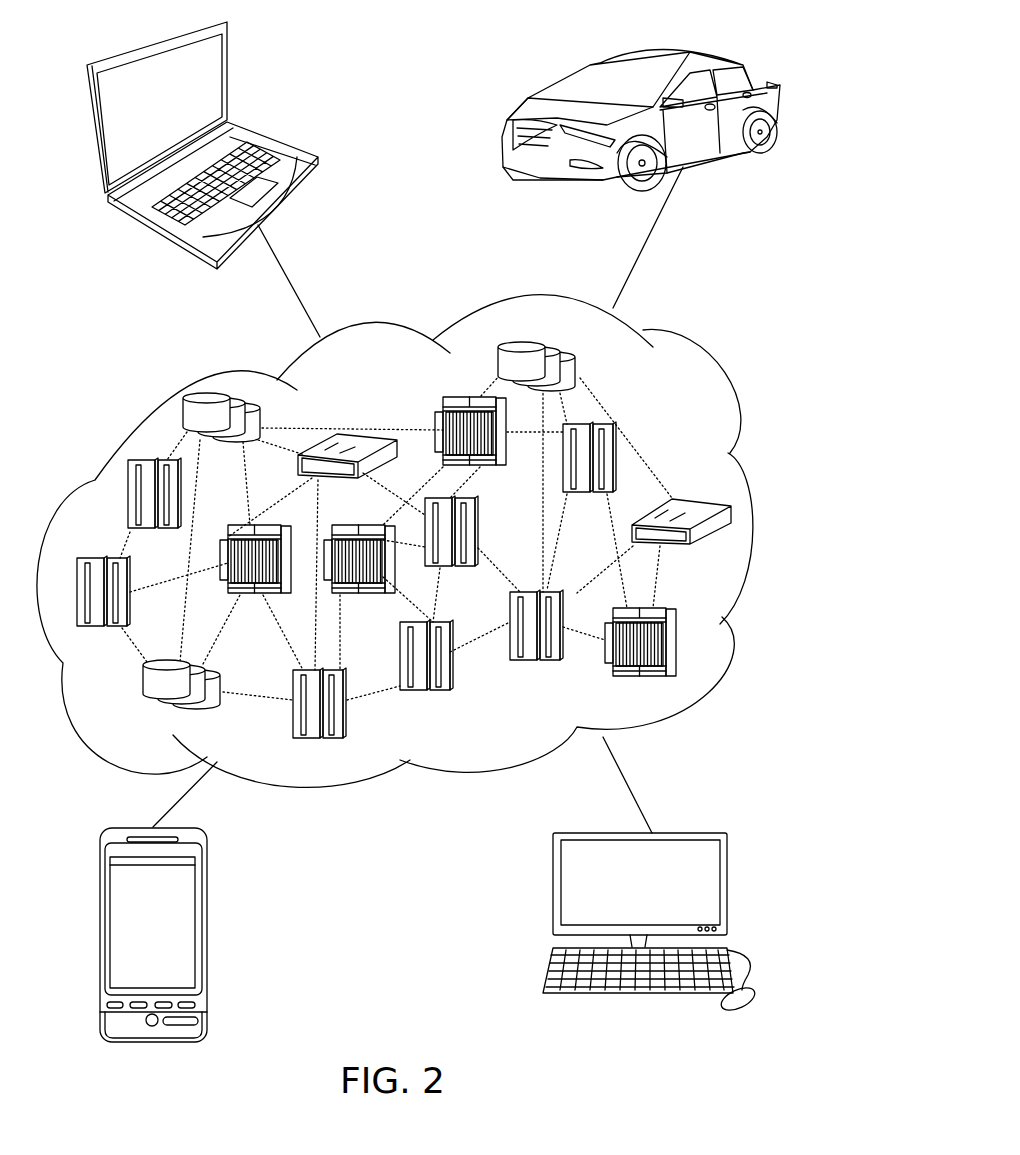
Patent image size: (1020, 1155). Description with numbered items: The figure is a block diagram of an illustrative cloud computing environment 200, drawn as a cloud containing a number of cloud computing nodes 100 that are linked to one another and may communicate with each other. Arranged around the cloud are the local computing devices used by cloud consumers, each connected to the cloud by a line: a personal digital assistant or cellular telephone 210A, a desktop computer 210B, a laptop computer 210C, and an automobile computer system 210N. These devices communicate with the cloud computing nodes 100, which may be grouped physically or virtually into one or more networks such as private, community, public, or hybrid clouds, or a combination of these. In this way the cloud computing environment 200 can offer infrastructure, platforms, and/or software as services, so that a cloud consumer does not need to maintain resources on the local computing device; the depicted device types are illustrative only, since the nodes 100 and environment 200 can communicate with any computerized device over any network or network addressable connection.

The cloud computing node 100 is at (701, 484).
The cloud computing environment 200 is at (705, 358).
The personal digital assistant or cellular telephone 210A is at (203, 852).
The desktop computer 210B is at (763, 831).
The laptop computer 210C is at (318, 118).
The automobile computer system 210N is at (740, 61).